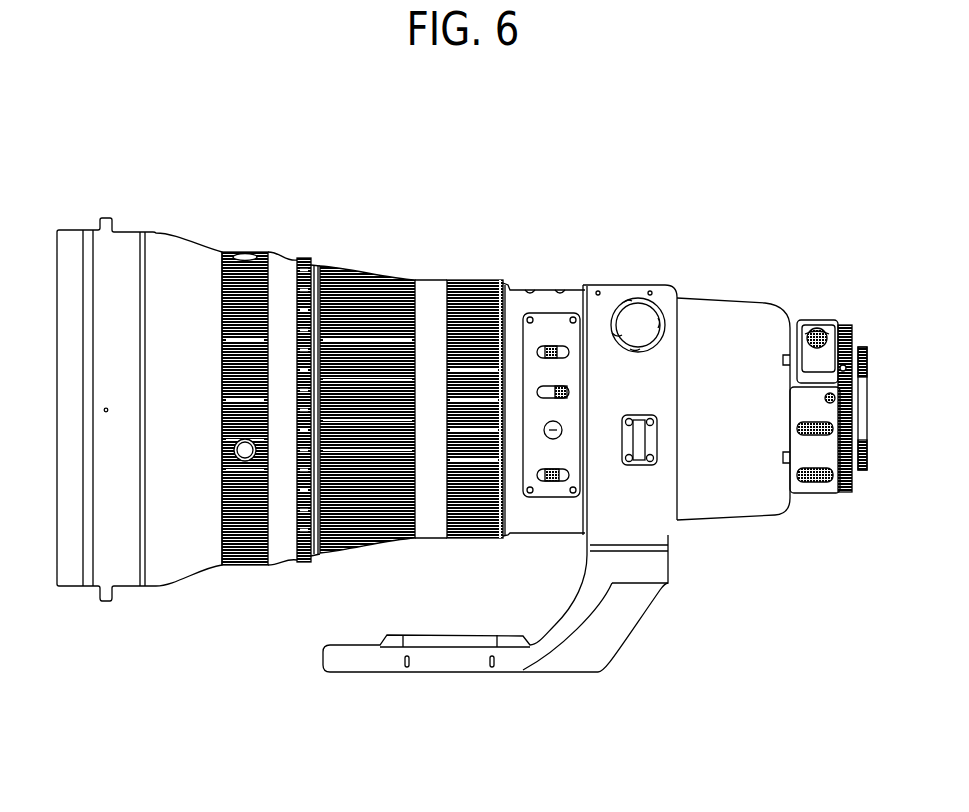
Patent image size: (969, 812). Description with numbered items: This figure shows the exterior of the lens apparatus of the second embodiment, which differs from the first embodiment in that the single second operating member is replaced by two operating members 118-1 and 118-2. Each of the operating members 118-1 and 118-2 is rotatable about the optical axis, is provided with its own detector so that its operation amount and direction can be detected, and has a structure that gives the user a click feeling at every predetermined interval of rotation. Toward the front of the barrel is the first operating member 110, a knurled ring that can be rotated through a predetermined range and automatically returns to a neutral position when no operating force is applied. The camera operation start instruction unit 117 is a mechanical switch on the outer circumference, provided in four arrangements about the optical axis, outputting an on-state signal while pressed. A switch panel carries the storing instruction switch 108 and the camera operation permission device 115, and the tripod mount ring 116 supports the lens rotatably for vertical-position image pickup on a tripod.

The storing instruction switch 108 is at (551, 438).
The first operating member 110 is at (303, 262).
The camera operation permission device 115 is at (553, 346).
The tripod mount ring 116 is at (672, 298).
The camera operation start instruction unit 117 is at (245, 253).
The operating member 118-1 is at (370, 277).
The operating member 118-2 is at (470, 280).